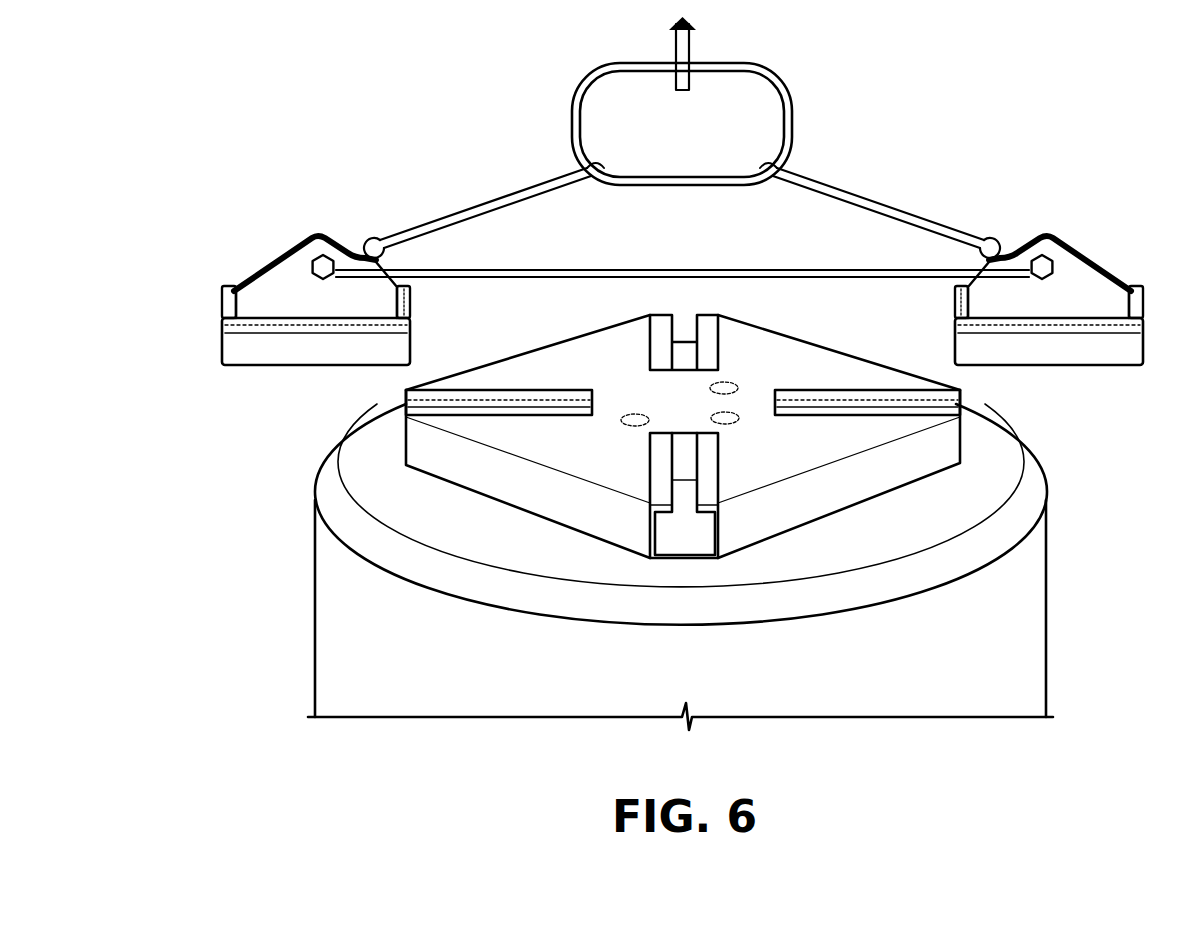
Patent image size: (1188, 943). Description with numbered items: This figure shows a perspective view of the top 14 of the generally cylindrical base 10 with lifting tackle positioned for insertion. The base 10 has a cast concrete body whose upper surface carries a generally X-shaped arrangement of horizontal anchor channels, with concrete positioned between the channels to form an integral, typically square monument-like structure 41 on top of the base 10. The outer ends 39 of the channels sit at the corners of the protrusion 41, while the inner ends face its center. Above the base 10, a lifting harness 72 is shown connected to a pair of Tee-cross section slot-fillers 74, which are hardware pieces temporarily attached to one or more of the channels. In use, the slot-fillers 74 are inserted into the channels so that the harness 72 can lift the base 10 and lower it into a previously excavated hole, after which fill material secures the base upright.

The base 10 is at (1056, 571).
The top 14 is at (546, 330).
The outer ends 39 is at (405, 392).
The monument-like structure 41 is at (790, 362).
The lifting harness 72 is at (806, 125).
The Tee-cross section slot-fillers 74 is at (290, 288).